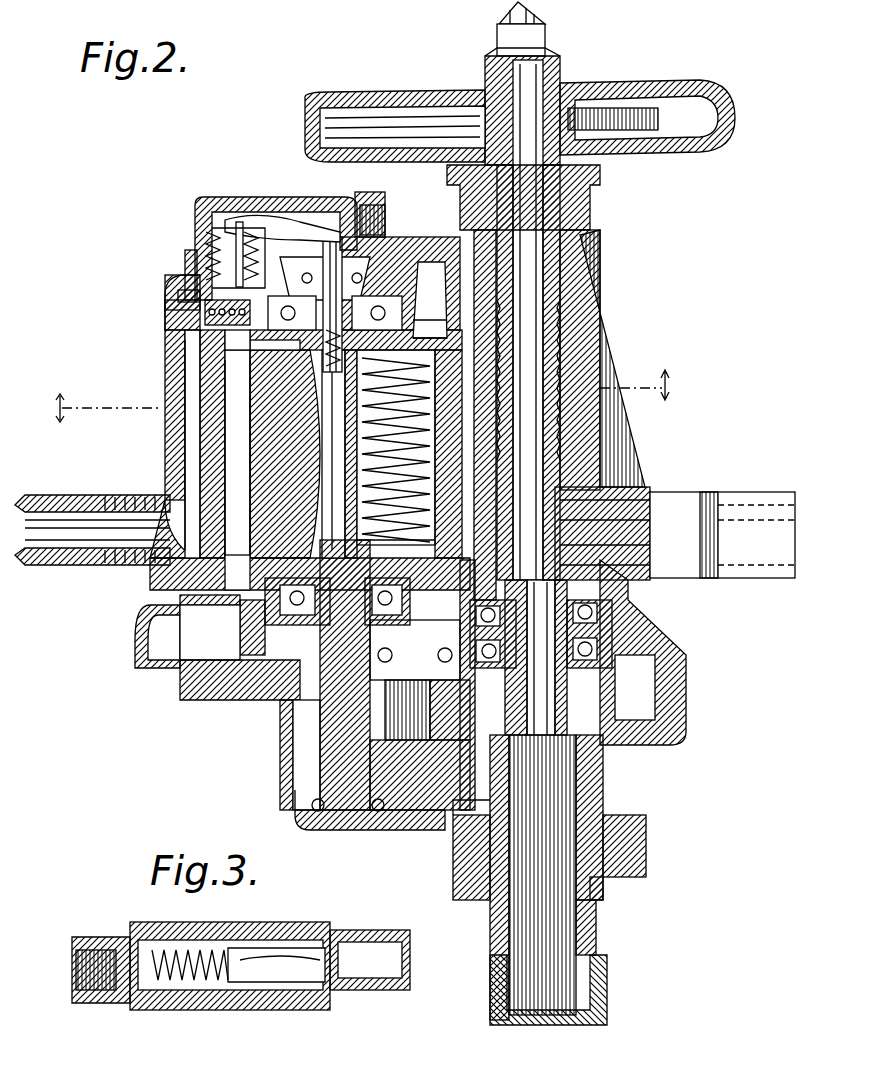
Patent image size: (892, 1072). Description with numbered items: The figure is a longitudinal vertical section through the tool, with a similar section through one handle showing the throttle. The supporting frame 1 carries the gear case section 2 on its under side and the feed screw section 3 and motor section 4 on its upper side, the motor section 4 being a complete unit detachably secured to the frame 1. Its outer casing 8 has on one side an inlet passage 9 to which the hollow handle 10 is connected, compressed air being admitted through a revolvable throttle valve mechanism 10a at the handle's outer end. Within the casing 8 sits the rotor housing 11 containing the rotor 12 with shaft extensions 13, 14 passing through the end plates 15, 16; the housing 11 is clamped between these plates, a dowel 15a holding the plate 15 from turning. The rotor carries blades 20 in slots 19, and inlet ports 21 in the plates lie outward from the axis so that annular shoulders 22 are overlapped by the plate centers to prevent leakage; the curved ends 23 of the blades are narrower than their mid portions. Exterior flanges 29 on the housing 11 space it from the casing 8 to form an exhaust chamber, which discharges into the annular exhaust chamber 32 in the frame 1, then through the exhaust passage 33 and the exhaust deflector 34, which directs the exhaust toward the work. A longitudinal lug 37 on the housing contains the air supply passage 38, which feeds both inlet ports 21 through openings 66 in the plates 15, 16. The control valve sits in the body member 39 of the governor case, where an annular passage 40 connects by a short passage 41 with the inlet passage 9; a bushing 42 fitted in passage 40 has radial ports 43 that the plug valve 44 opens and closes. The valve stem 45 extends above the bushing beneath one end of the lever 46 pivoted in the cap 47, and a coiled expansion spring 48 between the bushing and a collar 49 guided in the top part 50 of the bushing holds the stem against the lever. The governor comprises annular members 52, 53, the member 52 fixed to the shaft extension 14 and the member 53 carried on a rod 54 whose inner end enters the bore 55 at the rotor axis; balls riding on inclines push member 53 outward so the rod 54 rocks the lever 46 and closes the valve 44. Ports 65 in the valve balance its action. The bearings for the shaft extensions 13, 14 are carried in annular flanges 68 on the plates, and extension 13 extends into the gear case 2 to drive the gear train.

In FIG. 2, the supporting frame 1 is at (652, 632).
In FIG. 2, the gear case section 2 is at (688, 726).
In FIG. 2, the feed screw section 3 is at (585, 305).
In FIG. 2, the motor section 4 is at (158, 459).
In FIG. 2, the outer casing 8 is at (180, 360).
In FIG. 2, the inlet passage 9 is at (180, 380).
In FIG. 2, the hollow handle 10 is at (75, 565).
In FIG. 3, the hollow handle 10 is at (382, 992).
In FIG. 3, the throttle valve mechanism 10a is at (227, 990).
In FIG. 2, the rotor housing 11 is at (410, 440).
In FIG. 2, the rotor 12 is at (390, 420).
In FIG. 2, the shaft extension 13 is at (300, 740).
In FIG. 2, the shaft extension 14 is at (430, 316).
In FIG. 2, the end plate 15 is at (210, 632).
In FIG. 2, the dowel 15a is at (456, 648).
In FIG. 2, the end plate 16 is at (470, 320).
In FIG. 2, the rotor slots 19 is at (400, 465).
In FIG. 2, the plunger 20 is at (265, 435).
In FIG. 2, the inlet ports 21 is at (215, 345).
In FIG. 2, the annular shoulders 22 is at (360, 395).
In FIG. 2, the spring seat 23 is at (380, 495).
In FIG. 2, the exterior ribs or flanges 29 is at (480, 360).
In FIG. 2, the annular exhaust chamber 32 is at (212, 700).
In FIG. 2, the exhaust passage 33 is at (182, 625).
In FIG. 2, the exhaust deflector 34 is at (135, 655).
In FIG. 2, the lug 37 is at (225, 512).
In FIG. 2, the air supply passage 38 is at (200, 460).
In FIG. 2, the body member 39 is at (165, 315).
In FIG. 2, the annular passage 40 is at (420, 248).
In FIG. 2, the short passage 41 is at (172, 302).
In FIG. 2, the bushing 42 is at (190, 275).
In FIG. 2, the radial ports 43 is at (227, 315).
In FIG. 2, the plug valve 44 is at (185, 295).
In FIG. 2, the valve stem 45 is at (238, 222).
In FIG. 2, the lever 46 is at (242, 215).
In FIG. 2, the cap 47 is at (197, 203).
In FIG. 2, the coiled expansion spring 48 is at (215, 250).
In FIG. 2, the collar 49 is at (210, 235).
In FIG. 2, the top part of bushing 50 is at (330, 283).
In FIG. 2, the annular member 52 is at (430, 300).
In FIG. 2, the annular member 53 is at (385, 232).
In FIG. 2, the rod 54 is at (325, 304).
In FIG. 2, the bore or recess 55 is at (320, 402).
In FIG. 2, the ports 65 is at (607, 932).
In FIG. 2, the openings 66 is at (225, 588).
In FIG. 2, the annular flanges 68 is at (415, 499).